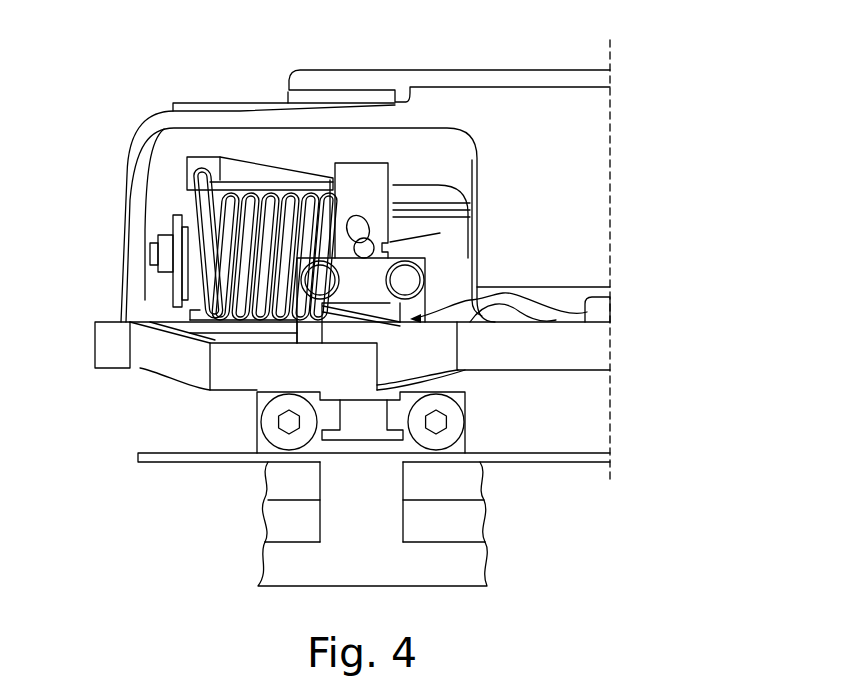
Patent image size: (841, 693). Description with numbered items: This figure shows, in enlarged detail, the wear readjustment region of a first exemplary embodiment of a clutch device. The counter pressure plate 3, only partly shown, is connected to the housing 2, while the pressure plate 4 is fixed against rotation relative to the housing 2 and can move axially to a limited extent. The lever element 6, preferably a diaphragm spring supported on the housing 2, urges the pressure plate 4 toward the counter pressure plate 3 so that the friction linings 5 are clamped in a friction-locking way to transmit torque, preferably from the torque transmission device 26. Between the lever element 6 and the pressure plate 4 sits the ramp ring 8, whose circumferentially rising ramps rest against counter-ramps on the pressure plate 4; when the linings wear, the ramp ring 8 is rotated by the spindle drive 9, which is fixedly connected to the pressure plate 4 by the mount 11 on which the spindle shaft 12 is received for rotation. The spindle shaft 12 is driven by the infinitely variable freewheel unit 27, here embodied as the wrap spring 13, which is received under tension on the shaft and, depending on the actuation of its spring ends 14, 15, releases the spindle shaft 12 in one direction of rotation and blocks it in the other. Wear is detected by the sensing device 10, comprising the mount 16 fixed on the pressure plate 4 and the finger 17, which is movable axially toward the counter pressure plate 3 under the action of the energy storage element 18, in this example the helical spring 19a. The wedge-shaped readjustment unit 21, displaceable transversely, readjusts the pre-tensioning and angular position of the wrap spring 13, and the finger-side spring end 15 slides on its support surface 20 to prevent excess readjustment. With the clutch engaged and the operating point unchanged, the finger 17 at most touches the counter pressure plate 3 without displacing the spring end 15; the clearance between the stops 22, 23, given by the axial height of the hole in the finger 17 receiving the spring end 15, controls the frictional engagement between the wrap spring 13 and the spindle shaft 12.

The housing 2 is at (587, 174).
The counter pressure plate 3 is at (449, 577).
The pressure plate 4 is at (593, 432).
The friction linings 5 is at (468, 480).
The lever element 6 is at (420, 197).
The ramp ring 8 is at (393, 253).
The spindle drive 9 is at (150, 285).
The sensing device 10 is at (308, 469).
The mount 11 is at (345, 240).
The spindle shaft 12 is at (155, 257).
The wrap spring 13 is at (268, 212).
The spring end 14 is at (203, 173).
The finger-side spring end 15 is at (465, 214).
The mount 16 is at (450, 403).
The finger 17 is at (372, 522).
The energy storage element 18 is at (587, 312).
The helical spring 19a is at (317, 330).
The support surface 20 is at (383, 219).
The readjustment unit 21 is at (390, 316).
The stop 22 is at (362, 212).
The stop 23 is at (190, 312).
The torque transmission device 26 is at (606, 552).
The infinitely variable freewheel unit 27 is at (170, 198).